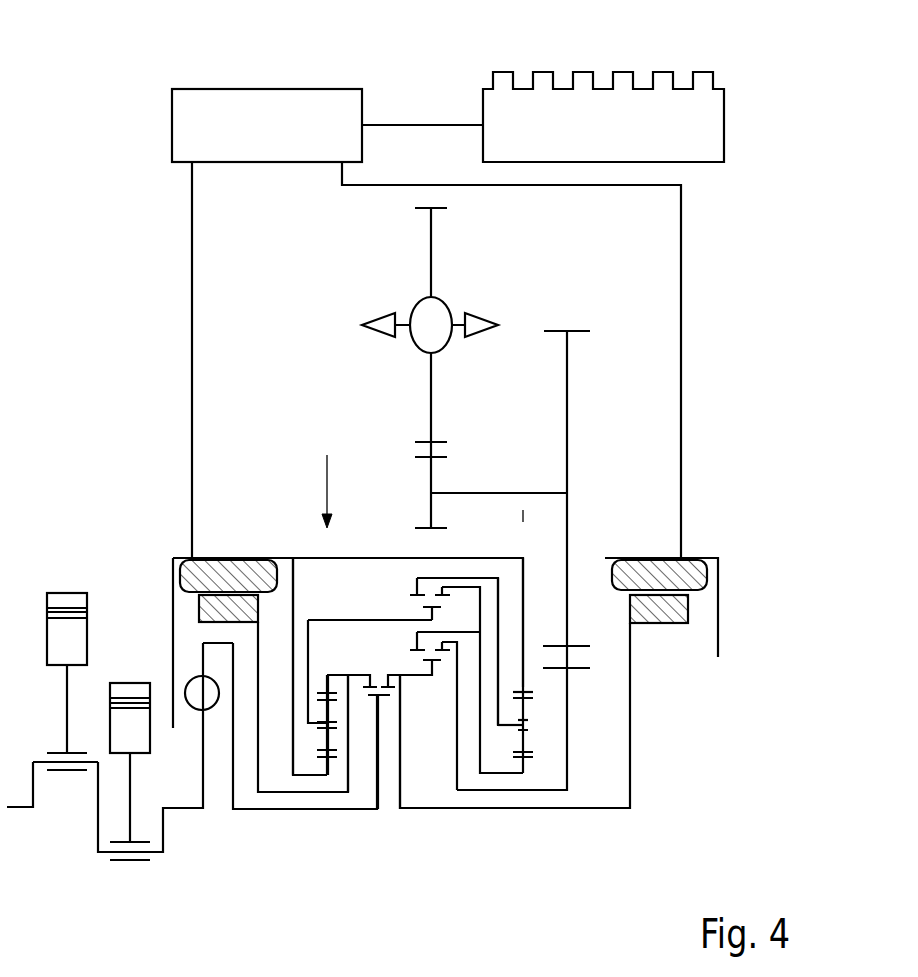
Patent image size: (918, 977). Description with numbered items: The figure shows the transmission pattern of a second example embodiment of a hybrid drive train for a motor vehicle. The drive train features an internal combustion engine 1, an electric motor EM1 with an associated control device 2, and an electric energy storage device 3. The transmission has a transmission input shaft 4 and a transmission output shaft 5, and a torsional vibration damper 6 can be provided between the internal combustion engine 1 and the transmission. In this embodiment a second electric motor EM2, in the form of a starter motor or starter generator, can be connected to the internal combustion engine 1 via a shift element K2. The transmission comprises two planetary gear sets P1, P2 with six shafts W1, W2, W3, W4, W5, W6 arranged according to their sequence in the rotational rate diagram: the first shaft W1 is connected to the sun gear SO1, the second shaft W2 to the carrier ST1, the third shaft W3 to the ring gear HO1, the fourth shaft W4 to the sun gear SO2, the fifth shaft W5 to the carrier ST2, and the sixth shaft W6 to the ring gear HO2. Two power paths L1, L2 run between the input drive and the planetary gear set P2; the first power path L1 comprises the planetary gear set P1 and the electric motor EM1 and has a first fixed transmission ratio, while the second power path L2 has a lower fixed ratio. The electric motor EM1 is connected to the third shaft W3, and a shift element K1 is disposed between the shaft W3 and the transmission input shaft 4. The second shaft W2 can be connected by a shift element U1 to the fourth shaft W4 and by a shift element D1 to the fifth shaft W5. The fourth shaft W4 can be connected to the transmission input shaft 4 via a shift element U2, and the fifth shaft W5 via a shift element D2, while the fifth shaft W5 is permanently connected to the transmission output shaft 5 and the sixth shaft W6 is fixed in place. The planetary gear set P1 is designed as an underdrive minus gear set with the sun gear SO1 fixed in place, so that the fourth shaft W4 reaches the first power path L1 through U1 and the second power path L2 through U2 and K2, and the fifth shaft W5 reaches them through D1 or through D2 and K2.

The internal combustion engine 1 is at (97, 613).
The torsional vibration damper 6 is at (190, 690).
The electric motor EM1 is at (217, 540).
The control device 2 is at (186, 108).
The second shaft W2 is at (318, 718).
The carrier ST1 is at (322, 712).
The ring gear HO1 is at (333, 690).
The third shaft W3 is at (338, 690).
The shift element D1 is at (412, 590).
The shift element U1 is at (442, 580).
The electric energy storage device 3 is at (612, 128).
The sixth shaft W6 is at (523, 573).
The fifth shaft W5 is at (502, 627).
The second electric motor EM2 is at (652, 546).
The ring gear HO2 is at (527, 690).
The transmission output shaft 5 is at (527, 720).
The transmission input shaft 4 is at (243, 809).
The first shaft W1 is at (330, 770).
The sun gear SO1 is at (349, 762).
The shift element K1 is at (366, 698).
The shift element K2 is at (390, 698).
The shift element U2 is at (401, 720).
The shift element D2 is at (440, 712).
The fourth shaft W4 is at (500, 782).
The sun gear SO2 is at (523, 760).
The carrier ST2 is at (531, 705).
The first planetary gear set P1 is at (326, 470).
The second planetary gear set P2 is at (523, 467).
The first power path L1 is at (392, 608).
The second power path L2 is at (403, 650).